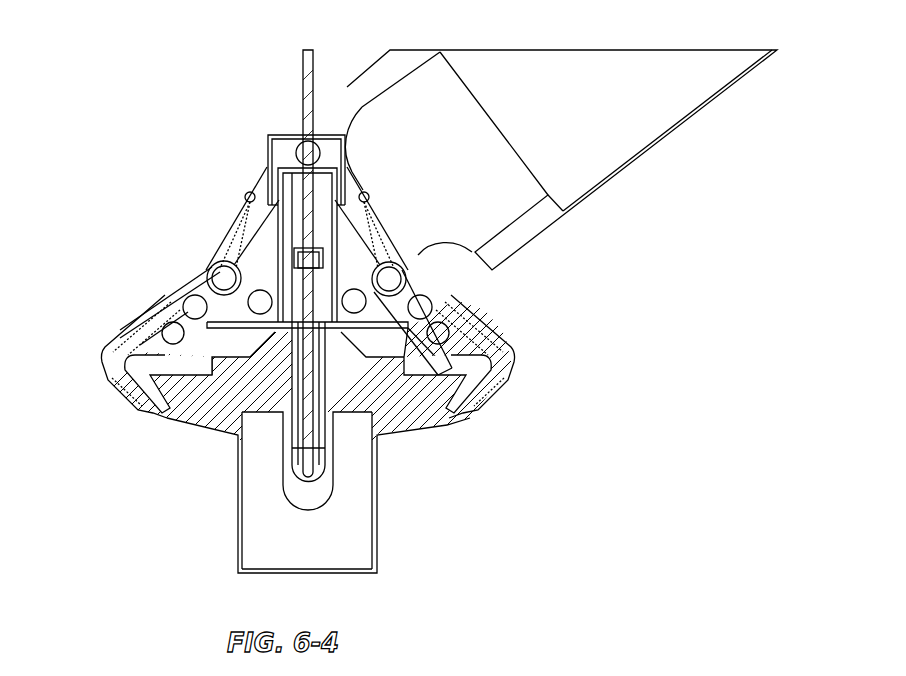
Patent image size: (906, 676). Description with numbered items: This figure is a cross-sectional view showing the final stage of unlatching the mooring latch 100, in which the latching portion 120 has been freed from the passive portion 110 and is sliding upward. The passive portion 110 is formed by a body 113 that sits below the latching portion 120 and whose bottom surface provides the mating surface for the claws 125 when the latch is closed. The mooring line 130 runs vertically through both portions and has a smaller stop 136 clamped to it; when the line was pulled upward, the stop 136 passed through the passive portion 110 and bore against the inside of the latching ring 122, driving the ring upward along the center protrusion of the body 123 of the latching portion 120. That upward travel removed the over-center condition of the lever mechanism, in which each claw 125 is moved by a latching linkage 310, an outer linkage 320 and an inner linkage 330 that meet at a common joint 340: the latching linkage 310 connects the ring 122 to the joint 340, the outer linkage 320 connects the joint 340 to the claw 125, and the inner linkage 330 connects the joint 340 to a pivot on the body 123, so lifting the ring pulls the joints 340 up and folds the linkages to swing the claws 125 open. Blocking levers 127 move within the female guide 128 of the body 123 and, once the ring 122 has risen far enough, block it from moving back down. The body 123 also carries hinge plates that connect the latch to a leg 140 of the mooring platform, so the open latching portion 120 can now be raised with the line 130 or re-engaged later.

The mooring latch 100 is at (152, 108).
The passive portion 110 is at (205, 469).
The body 113 is at (372, 391).
The latching portion 120 is at (157, 202).
The latching ring 122 is at (268, 168).
The body 123 is at (440, 366).
The claws 125 is at (104, 370).
The blocking levers 127 is at (295, 261).
The female guide 128 is at (298, 218).
The mooring line 130 is at (315, 68).
The stop 136 is at (300, 145).
The leg 140 is at (588, 122).
The latching linkage 310 is at (385, 242).
The outer linkage 320 is at (418, 286).
The inner linkage 330 is at (365, 280).
The common joint 340 is at (398, 270).